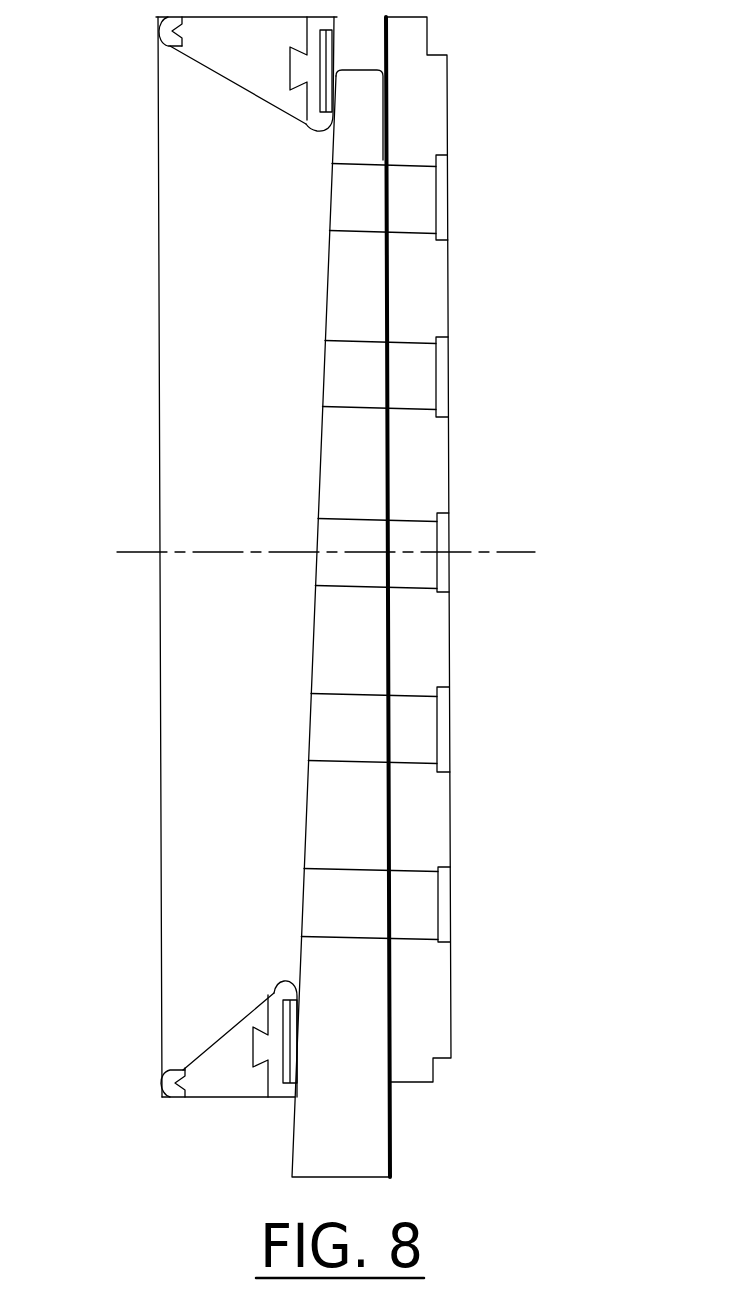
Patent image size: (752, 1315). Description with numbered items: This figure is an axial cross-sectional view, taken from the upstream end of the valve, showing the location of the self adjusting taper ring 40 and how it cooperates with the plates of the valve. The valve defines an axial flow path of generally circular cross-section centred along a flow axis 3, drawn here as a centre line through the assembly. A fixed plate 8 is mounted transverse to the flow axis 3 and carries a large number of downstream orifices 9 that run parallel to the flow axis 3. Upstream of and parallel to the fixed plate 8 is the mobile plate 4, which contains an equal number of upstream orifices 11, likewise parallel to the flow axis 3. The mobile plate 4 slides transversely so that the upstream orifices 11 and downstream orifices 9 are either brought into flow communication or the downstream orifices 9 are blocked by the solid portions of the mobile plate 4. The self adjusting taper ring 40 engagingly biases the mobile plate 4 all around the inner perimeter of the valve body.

The flow axis 3 is at (513, 552).
The mobile plate 4 is at (350, 458).
The fixed plate 8 is at (413, 460).
The downstream orifices 9 is at (450, 193).
The upstream orifices 11 is at (316, 203).
The self adjusting taper ring 40 is at (245, 290).